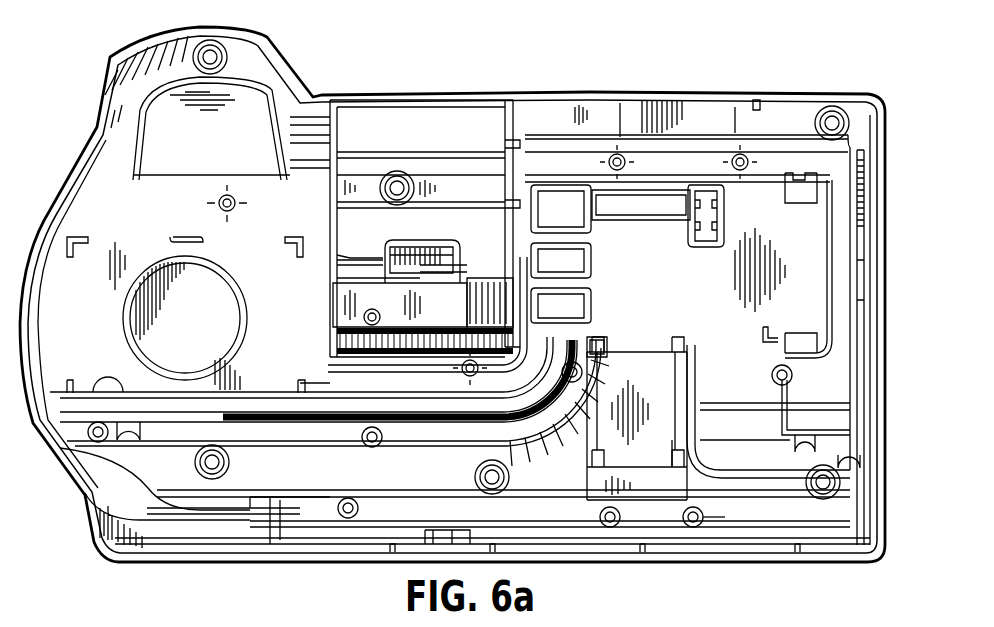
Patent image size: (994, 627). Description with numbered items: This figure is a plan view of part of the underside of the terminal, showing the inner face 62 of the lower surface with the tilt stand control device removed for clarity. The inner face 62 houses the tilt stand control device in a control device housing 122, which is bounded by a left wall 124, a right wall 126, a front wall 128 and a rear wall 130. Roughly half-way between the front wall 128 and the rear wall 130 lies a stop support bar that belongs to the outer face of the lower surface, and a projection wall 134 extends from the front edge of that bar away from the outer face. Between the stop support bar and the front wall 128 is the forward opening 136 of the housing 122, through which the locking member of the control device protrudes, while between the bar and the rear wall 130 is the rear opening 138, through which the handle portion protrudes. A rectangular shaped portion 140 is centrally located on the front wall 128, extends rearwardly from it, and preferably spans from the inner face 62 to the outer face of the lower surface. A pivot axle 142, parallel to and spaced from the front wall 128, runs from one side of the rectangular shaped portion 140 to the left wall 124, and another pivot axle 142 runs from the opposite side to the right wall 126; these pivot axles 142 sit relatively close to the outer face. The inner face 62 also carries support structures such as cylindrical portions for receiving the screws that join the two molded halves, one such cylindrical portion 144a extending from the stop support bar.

The inner face 62 is at (452, 294).
The control device housing 122 is at (535, 120).
The left wall 124 is at (393, 236).
The right wall 126 is at (507, 223).
The front wall 128 is at (463, 280).
The rear wall 130 is at (400, 92).
The projection wall 134 is at (463, 197).
The forward opening 136 is at (483, 243).
The rear opening 138 is at (293, 122).
The rectangular shaped portion 140 is at (397, 232).
The pivot axle 142 is at (347, 260).
The cylindrical portion 144a is at (402, 172).